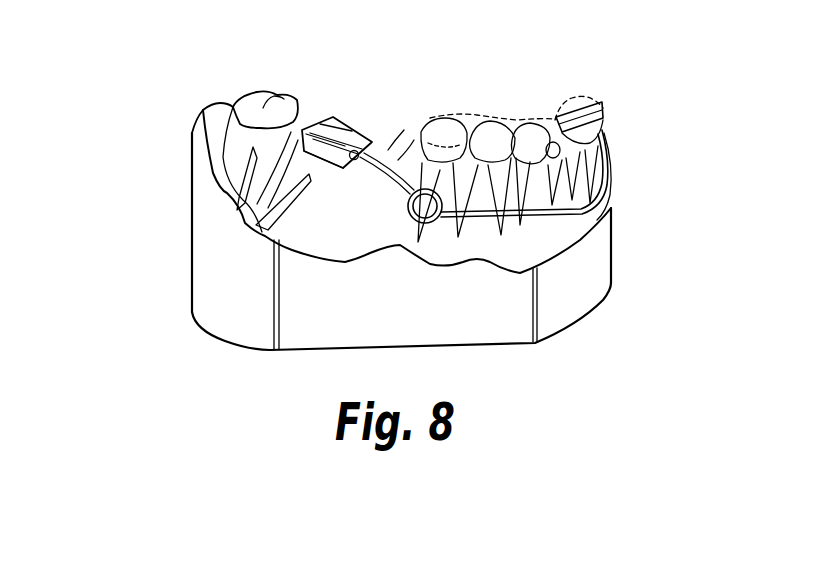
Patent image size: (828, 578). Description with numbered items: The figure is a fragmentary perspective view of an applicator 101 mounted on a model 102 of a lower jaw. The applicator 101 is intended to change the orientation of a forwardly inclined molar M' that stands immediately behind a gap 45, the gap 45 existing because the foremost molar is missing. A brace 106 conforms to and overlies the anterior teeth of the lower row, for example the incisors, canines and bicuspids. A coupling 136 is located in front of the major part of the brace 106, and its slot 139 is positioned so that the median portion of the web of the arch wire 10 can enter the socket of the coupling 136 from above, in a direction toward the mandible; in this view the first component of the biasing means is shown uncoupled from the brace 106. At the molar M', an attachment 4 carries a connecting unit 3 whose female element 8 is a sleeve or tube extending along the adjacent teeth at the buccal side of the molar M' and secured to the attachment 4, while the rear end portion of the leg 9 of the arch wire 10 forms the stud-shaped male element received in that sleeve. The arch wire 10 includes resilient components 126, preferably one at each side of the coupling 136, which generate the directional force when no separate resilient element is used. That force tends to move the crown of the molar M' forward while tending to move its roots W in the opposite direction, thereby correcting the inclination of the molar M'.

The applicator 101 is at (355, 191).
The model 102 is at (558, 313).
The connecting unit 3 is at (335, 130).
The female element 8 is at (333, 117).
The forwardly inclined molar M' is at (340, 80).
The gap 45 is at (388, 147).
The attachment 4 is at (342, 170).
The leg 9 is at (377, 175).
The roots W is at (345, 172).
The arch wire 10 is at (507, 217).
The resilient component 126 is at (405, 221).
The brace 106 is at (482, 160).
The slot 139 is at (556, 117).
The coupling 136 is at (626, 83).